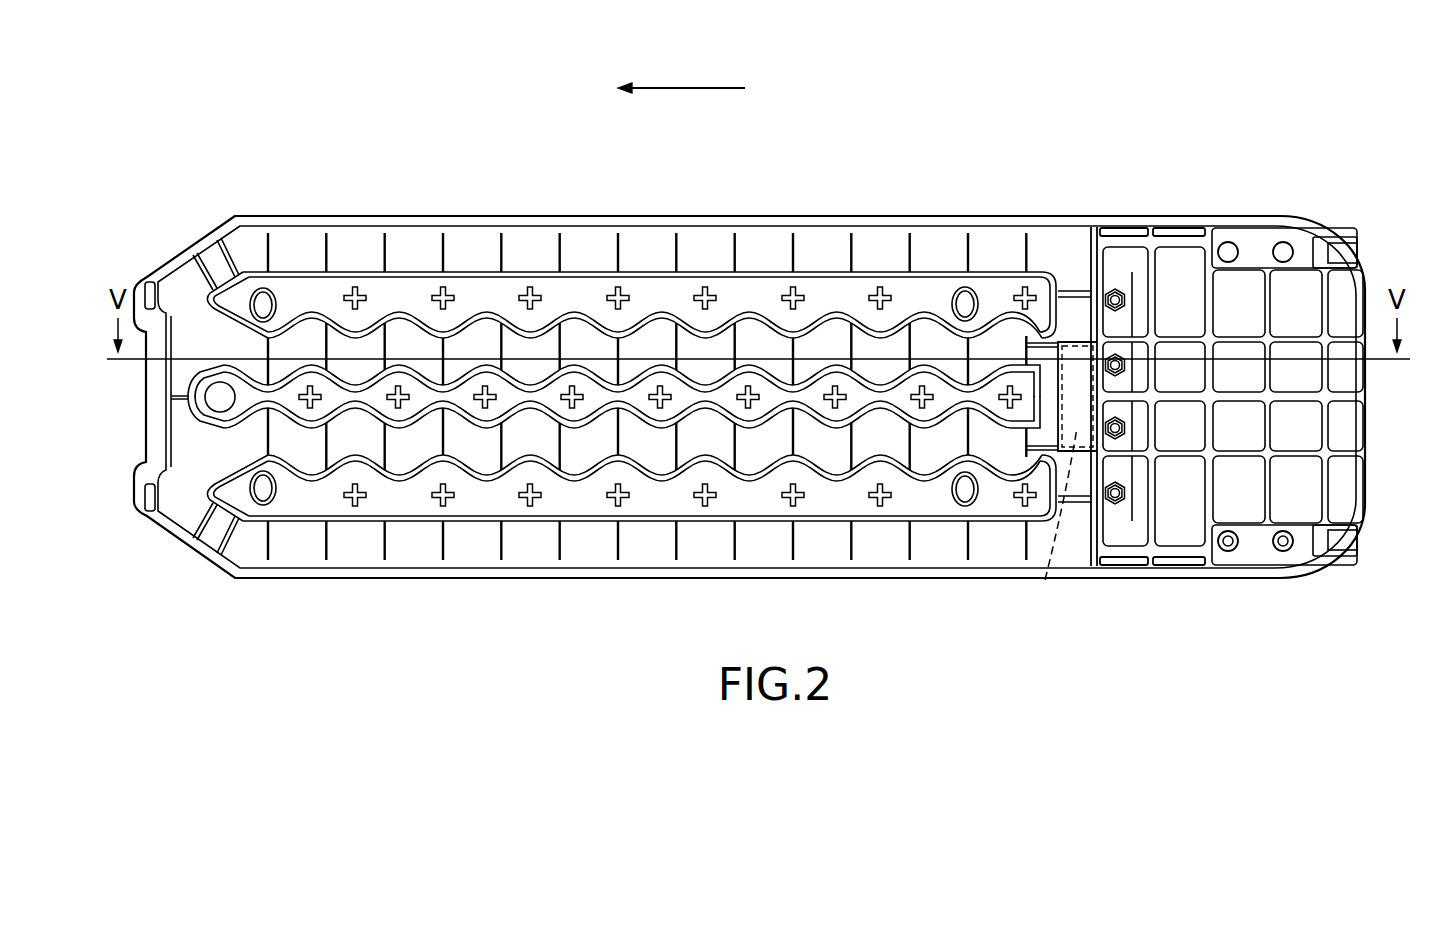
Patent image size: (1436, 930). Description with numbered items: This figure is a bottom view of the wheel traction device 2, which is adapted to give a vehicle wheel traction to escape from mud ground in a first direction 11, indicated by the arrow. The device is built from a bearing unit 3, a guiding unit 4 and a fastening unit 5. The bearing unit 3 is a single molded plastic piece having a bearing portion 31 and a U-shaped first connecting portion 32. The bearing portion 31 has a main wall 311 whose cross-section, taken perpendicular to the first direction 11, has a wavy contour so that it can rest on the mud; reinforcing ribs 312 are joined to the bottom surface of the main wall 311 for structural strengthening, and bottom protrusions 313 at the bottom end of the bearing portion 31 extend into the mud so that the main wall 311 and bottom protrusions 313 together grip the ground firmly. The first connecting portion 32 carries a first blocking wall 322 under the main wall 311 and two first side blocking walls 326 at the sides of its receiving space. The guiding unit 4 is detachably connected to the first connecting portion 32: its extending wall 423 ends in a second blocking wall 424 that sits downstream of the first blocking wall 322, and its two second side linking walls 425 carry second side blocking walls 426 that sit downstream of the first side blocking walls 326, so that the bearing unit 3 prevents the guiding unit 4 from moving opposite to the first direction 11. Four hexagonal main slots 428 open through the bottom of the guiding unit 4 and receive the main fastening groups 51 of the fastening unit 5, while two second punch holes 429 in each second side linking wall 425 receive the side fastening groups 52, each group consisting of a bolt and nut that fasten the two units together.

The wheel traction device 2 is at (345, 128).
The bearing unit 3 is at (440, 172).
The bearing portion 31 is at (542, 214).
The main wall 311 is at (562, 410).
The reinforcing ribs 312 is at (680, 450).
The bottom protrusions 313 is at (747, 388).
The first connecting portion 32 is at (1148, 212).
The first blocking wall 322 is at (1048, 560).
The first side blocking walls 326 is at (1322, 240).
The guiding unit 4 is at (1382, 442).
The extending wall 423 is at (1080, 440).
The second blocking wall 424 is at (1032, 435).
The second side linking walls 425 is at (1252, 246).
The second side blocking walls 426 is at (1290, 243).
The main slots 428 is at (1113, 285).
The second punch holes 429 is at (1226, 243).
The fastening unit 5 is at (1224, 562).
The main fastening groups 51 is at (1110, 360).
The side fastening groups 52 is at (1230, 552).
The first direction 11 is at (683, 88).